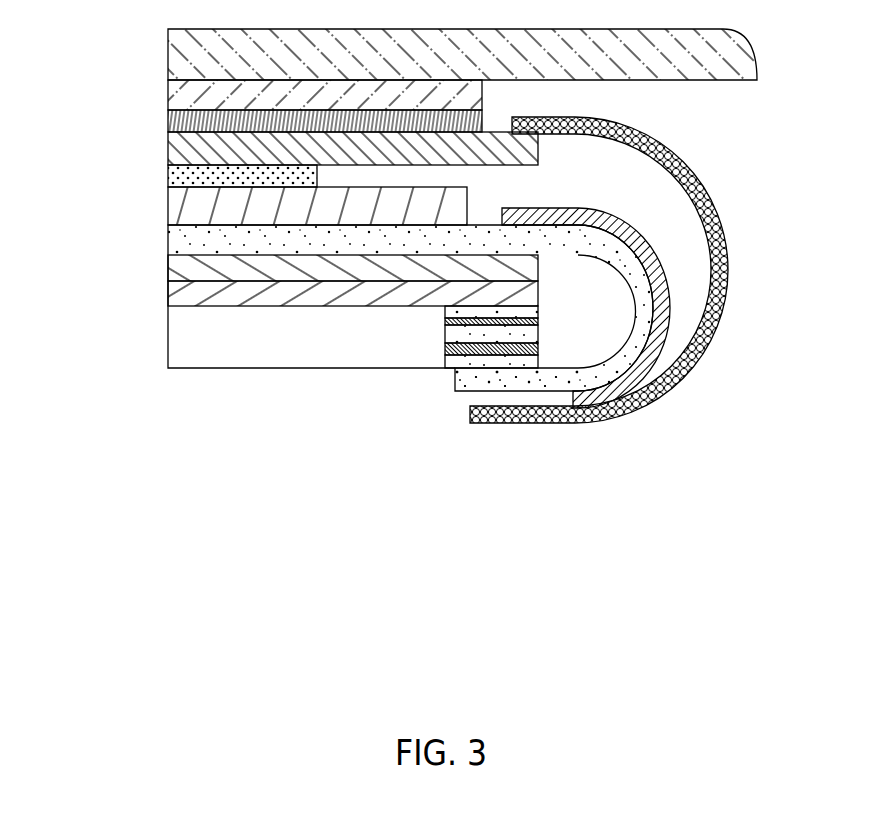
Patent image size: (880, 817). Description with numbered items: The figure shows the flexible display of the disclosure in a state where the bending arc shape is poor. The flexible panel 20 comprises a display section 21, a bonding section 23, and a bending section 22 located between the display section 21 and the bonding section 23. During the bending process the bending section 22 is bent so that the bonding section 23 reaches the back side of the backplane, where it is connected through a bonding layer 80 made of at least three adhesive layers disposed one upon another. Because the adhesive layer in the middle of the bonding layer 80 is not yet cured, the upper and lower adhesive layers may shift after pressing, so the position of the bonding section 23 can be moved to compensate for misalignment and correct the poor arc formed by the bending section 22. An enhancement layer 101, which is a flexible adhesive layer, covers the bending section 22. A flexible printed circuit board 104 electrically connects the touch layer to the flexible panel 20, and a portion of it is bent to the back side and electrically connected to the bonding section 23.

The flexible panel 20 is at (168, 263).
The display section 21 is at (277, 238).
The bending section 22 is at (670, 312).
The bonding section 23 is at (523, 370).
The bonding layer 80 is at (423, 350).
The enhancement layer 101 is at (660, 260).
The flexible printed circuit board 104 is at (710, 203).